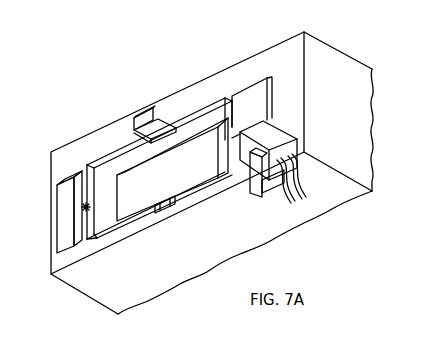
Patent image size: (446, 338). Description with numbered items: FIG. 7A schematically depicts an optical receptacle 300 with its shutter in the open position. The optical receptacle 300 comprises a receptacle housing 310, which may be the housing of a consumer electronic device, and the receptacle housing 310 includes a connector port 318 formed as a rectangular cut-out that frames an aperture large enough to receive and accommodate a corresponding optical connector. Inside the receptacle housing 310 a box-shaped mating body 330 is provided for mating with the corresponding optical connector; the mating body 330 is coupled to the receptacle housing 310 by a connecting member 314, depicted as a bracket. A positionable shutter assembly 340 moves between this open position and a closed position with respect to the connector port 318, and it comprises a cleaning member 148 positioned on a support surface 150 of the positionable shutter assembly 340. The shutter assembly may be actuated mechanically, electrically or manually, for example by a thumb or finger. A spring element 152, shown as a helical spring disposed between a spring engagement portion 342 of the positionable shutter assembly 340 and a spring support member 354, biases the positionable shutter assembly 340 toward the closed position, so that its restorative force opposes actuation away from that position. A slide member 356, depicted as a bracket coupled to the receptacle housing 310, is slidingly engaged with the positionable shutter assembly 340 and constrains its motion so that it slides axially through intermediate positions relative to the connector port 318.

The optical receptacle 300 is at (369, 101).
The receptacle housing 310 is at (319, 47).
The connecting member 314 is at (273, 197).
The connector port 318 is at (262, 74).
The mating body 330 is at (280, 133).
The positionable shutter assembly 340 is at (163, 212).
The spring engagement portion 342 is at (96, 237).
The cleaning member 148 is at (138, 210).
The support surface 150 is at (106, 166).
The spring element 152 is at (85, 209).
The spring support member 354 is at (70, 202).
The slide member 356 is at (151, 125).